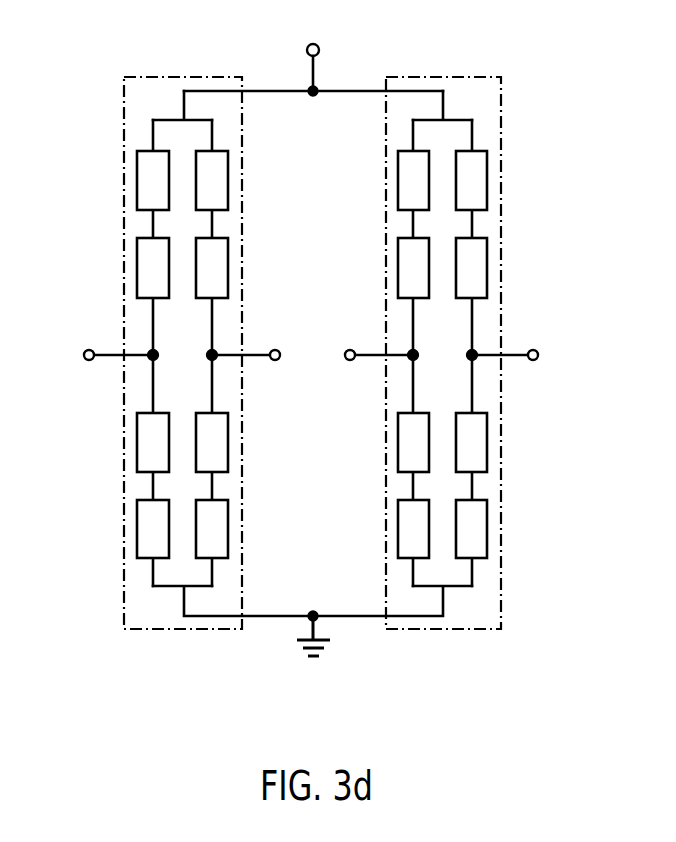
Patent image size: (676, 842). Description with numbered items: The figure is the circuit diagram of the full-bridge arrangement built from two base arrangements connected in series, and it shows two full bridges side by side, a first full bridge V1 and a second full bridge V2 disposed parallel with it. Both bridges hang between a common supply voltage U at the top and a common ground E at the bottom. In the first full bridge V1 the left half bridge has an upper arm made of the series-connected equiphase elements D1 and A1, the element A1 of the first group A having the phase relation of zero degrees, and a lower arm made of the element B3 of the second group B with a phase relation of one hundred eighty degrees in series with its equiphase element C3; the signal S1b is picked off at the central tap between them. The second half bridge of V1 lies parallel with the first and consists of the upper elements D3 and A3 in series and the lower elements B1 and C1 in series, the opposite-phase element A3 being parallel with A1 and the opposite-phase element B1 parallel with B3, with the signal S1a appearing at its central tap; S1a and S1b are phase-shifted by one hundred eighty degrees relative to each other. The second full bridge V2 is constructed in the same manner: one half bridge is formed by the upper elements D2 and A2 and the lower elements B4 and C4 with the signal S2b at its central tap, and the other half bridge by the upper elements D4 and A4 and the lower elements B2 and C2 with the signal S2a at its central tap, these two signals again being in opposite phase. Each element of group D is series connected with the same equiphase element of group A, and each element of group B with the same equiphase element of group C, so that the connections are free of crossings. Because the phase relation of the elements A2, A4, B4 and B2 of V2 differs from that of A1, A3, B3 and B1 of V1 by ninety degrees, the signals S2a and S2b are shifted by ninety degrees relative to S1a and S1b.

The supply voltage U is at (328, 40).
The ground E is at (319, 654).
The signal S1a is at (256, 338).
The signal S1b is at (102, 338).
The signal S2a is at (521, 338).
The signal S2b is at (376, 338).
The first full bridge V1 is at (137, 593).
The second full bridge V2 is at (490, 589).
The element of second group D D1 is at (153, 180).
The element of second group D D2 is at (413, 180).
The element of second group D D3 is at (212, 180).
The element of second group D D4 is at (471, 180).
The element of first group A A1 is at (153, 268).
The element of first group A A2 is at (413, 268).
The element of first group A A3 is at (212, 268).
The element of first group A A4 is at (471, 268).
The element of second group B B1 is at (212, 442).
The element of second group B B2 is at (471, 442).
The element of second group B B3 is at (153, 442).
The element of second group B B4 is at (413, 442).
The element of first group C C1 is at (212, 529).
The element of first group C C2 is at (471, 529).
The element of first group C C3 is at (153, 529).
The element of first group C C4 is at (413, 529).